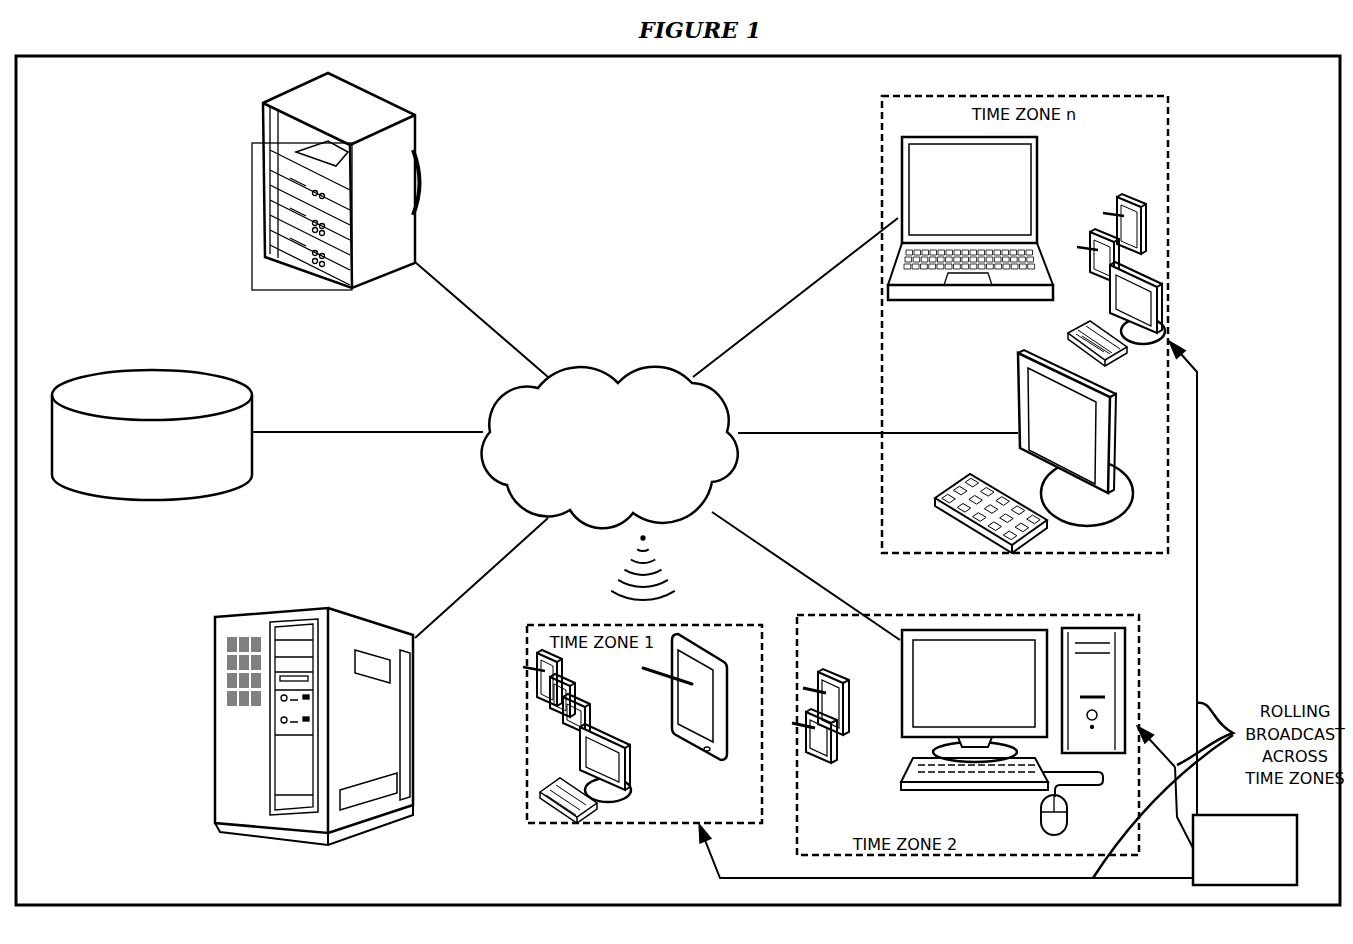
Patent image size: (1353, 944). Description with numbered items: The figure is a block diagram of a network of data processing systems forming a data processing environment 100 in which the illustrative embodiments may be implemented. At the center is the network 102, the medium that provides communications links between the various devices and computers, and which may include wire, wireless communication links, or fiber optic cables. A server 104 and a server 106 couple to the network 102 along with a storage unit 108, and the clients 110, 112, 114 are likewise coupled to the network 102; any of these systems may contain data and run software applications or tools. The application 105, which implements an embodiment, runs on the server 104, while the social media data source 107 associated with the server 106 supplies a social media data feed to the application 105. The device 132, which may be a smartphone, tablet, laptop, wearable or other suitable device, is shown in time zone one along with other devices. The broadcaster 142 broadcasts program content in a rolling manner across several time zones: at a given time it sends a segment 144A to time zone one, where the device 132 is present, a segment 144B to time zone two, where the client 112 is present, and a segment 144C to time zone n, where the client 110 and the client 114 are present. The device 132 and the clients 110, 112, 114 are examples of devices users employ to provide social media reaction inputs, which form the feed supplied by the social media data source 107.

The data processing environment 100 is at (678, 480).
The network 102 is at (610, 448).
The server 104 is at (336, 193).
The application 105 is at (350, 167).
The server 106 is at (314, 736).
The social media data source 107 is at (373, 657).
The storage unit 108 is at (152, 435).
The client 110 is at (1045, 451).
The client 112 is at (958, 731).
The client 114 is at (970, 218).
The device 132 is at (698, 720).
The broadcaster 142 is at (1245, 850).
The segment 144A is at (946, 851).
The segment 144B is at (1165, 781).
The segment 144C is at (1193, 578).